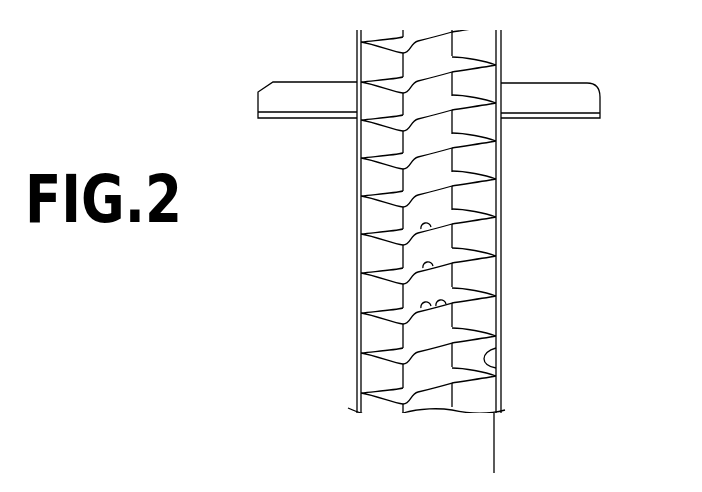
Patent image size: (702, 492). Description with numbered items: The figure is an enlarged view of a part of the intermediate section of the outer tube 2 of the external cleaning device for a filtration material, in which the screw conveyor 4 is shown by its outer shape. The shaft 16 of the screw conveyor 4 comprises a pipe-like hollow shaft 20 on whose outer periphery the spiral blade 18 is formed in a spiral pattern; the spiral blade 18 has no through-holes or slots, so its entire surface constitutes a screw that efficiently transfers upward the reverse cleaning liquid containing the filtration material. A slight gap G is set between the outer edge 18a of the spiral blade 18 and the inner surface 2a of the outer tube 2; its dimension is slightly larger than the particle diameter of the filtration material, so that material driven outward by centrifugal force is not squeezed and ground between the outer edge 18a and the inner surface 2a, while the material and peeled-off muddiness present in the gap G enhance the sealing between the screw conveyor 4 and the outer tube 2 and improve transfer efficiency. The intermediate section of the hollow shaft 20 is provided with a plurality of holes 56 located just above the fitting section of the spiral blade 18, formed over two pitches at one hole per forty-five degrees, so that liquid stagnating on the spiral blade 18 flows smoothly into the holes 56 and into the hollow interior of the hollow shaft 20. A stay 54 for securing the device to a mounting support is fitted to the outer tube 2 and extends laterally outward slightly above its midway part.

The outer tube 2 is at (503, 153).
The inner surface of the outer tube 2a is at (498, 373).
The screw conveyor 4 is at (587, 185).
The shaft 16 is at (394, 300).
The spiral blade 18 is at (479, 196).
The outer edge of the spiral blade 18a is at (475, 265).
The hollow shaft 20 is at (400, 343).
The stay 54 is at (307, 87).
The holes 56 is at (403, 229).
The gap G is at (475, 452).